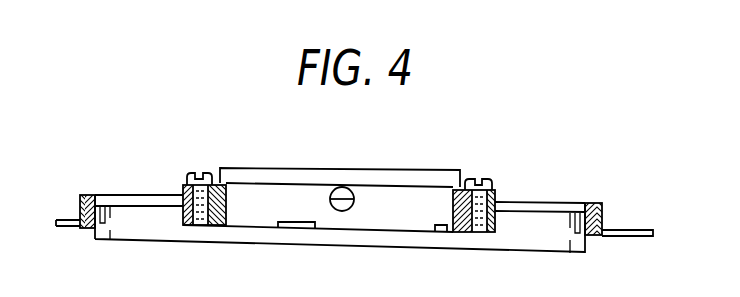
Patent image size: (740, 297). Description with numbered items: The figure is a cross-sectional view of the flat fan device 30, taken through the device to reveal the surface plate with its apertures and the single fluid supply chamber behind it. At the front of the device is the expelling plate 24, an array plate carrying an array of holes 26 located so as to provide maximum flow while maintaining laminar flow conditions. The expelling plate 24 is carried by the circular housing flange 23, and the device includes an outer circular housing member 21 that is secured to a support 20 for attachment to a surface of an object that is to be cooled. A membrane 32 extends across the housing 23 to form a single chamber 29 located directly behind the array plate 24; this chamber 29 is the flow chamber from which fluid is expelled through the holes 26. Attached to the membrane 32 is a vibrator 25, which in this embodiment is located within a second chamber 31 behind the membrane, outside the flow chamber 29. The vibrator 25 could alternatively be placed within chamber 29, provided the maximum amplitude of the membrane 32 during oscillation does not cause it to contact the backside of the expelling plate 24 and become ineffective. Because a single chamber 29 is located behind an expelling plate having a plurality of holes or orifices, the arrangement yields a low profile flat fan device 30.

The support 20 is at (632, 231).
The outer circular housing member 21 is at (599, 203).
The circular housing flange 23 is at (496, 199).
The expelling plate 24 is at (396, 170).
The vibrator 25 is at (341, 211).
The holes 26 is at (288, 168).
The chamber 29 is at (252, 178).
The flat fan device 30 is at (257, 143).
The second chamber 31 is at (401, 209).
The membrane 32 is at (286, 184).